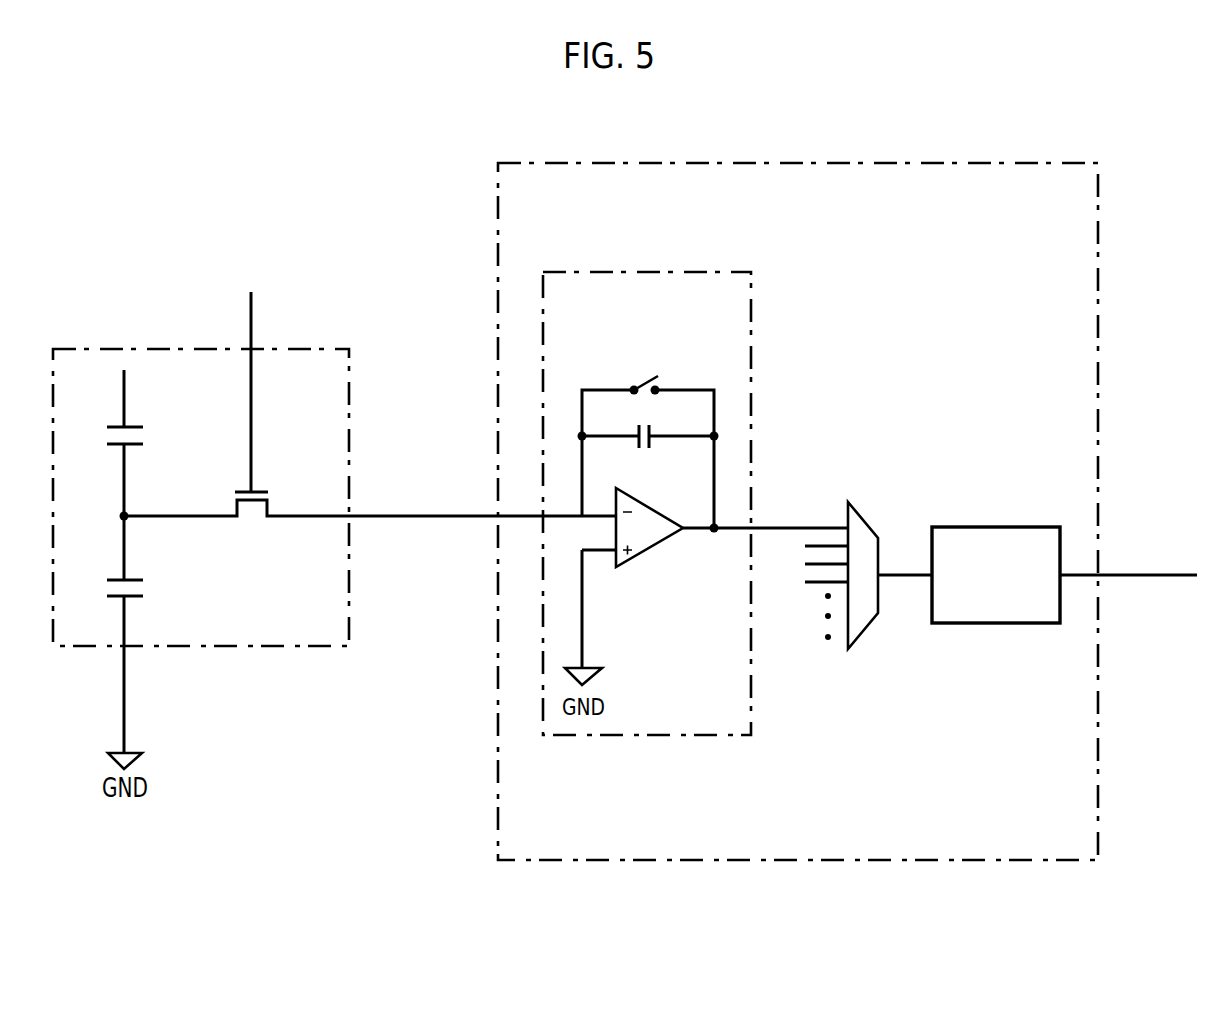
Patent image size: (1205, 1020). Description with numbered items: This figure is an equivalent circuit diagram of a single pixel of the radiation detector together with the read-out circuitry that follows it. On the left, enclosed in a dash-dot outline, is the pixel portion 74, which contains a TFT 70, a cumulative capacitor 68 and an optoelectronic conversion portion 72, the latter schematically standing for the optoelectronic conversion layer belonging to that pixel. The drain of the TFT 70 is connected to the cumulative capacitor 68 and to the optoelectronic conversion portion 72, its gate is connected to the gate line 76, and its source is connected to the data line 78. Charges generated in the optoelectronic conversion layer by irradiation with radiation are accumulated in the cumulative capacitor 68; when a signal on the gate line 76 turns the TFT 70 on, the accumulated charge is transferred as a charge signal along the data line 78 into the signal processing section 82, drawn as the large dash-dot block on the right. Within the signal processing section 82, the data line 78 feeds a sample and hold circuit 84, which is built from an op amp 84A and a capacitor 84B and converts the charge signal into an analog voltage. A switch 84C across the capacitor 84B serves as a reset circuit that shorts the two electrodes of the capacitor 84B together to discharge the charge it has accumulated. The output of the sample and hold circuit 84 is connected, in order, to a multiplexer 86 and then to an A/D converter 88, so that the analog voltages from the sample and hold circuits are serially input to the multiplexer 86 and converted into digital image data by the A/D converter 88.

The cumulative capacitor 68 is at (130, 580).
The TFT 70 is at (255, 491).
The optoelectronic conversion portion 72 is at (130, 427).
The pixel portion 74 is at (118, 346).
The gate line 76 is at (253, 322).
The data line 78 is at (424, 519).
The signal processing section 82 is at (918, 160).
The sample and hold circuit 84 is at (649, 270).
The op amp 84A is at (657, 547).
The capacitor 84B is at (653, 443).
The switch 84C is at (643, 381).
The multiplexer 86 is at (862, 518).
The A/D converter 88 is at (998, 527).